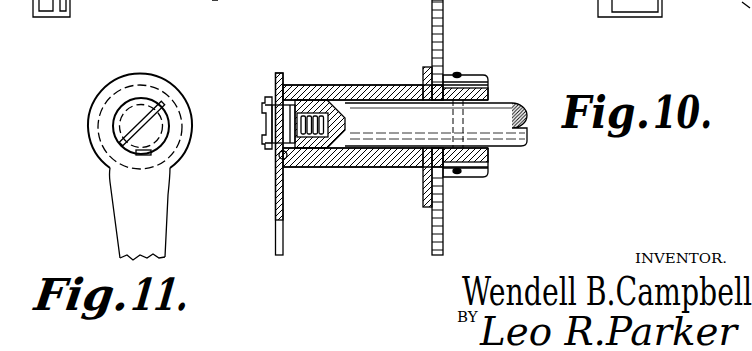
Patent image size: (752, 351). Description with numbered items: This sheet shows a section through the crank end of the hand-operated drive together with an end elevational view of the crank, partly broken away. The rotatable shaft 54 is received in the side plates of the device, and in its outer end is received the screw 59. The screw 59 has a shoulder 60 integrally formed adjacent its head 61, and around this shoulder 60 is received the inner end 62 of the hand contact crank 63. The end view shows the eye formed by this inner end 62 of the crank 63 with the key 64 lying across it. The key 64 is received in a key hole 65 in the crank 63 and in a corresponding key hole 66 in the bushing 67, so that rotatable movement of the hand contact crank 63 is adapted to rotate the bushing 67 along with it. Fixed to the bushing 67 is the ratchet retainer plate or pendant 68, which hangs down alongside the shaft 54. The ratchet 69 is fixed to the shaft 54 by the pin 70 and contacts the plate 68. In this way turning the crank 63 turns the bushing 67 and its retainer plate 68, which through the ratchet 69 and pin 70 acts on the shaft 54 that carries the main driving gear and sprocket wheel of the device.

In FIG. 10, the shaft 54 is at (508, 102).
In FIG. 10, the screw 59 is at (265, 98).
In FIG. 10, the shoulder 60 is at (290, 86).
In FIG. 10, the head 61 is at (270, 155).
In FIG. 10, the inner end 62 is at (285, 200).
In FIG. 11, the hand contact crank 63 is at (275, 237).
In FIG. 11, the key 64 is at (143, 156).
In FIG. 10, the key hole 65 is at (287, 163).
In FIG. 10, the key hole 66 is at (325, 167).
In FIG. 10, the bushing 67 is at (338, 85).
In FIG. 10, the ratchet retainer plate 68 is at (422, 70).
In FIG. 10, the ratchet 69 is at (444, 23).
In FIG. 10, the pin 70 is at (458, 73).